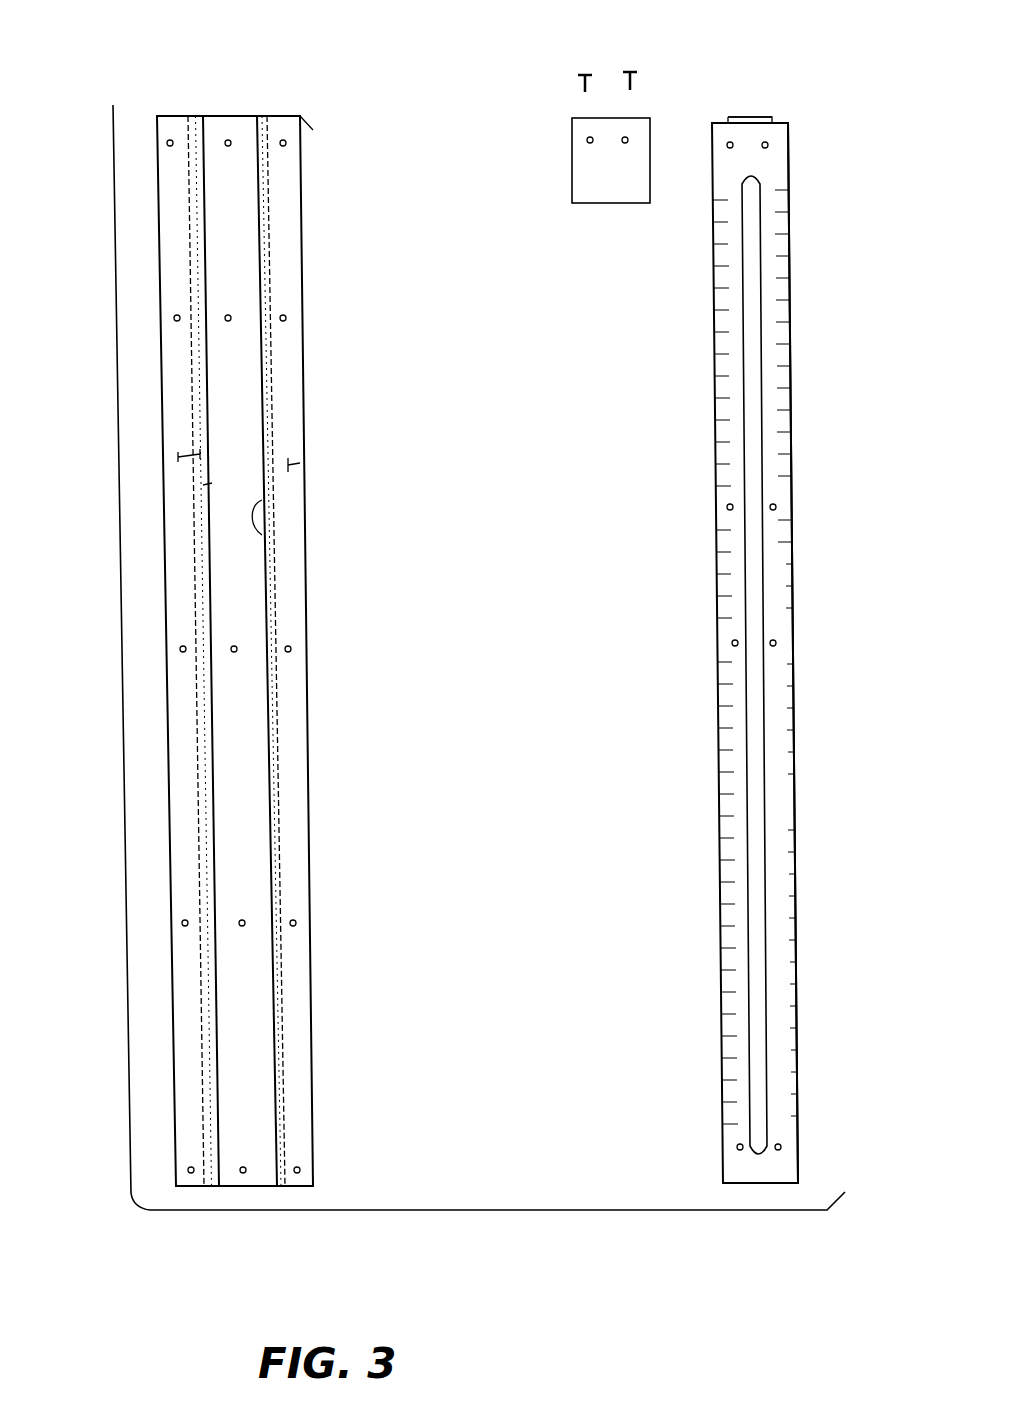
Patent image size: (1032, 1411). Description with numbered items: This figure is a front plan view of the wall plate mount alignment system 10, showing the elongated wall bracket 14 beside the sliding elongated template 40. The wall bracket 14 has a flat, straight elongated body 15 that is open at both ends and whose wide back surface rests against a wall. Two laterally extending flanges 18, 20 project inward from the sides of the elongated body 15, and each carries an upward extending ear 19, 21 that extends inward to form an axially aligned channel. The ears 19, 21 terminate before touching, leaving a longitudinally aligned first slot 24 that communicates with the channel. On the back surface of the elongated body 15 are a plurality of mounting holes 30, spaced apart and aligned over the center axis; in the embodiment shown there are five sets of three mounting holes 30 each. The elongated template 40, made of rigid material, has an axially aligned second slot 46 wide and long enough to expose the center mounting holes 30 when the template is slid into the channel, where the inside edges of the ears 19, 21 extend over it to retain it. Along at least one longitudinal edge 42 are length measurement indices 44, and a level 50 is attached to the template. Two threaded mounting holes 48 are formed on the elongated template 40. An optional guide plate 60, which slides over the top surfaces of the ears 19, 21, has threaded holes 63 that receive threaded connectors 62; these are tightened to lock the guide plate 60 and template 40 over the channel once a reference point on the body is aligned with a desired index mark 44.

The wall plate mount alignment system 10 is at (150, 1210).
The elongated wall bracket 14 is at (305, 196).
The elongated body 15 is at (300, 125).
The flange 18 is at (200, 453).
The ear 19 is at (210, 488).
The flange 20 is at (300, 463).
The ear 21 is at (265, 533).
The first slot 24 is at (232, 312).
The mounting holes 30 is at (173, 140).
The elongated template 40 is at (797, 165).
The longitudinal edge 42 is at (791, 265).
The length measurement indices 44 is at (733, 505).
The second slot 46 is at (757, 818).
The threaded mounting holes 48 is at (733, 143).
The level 50 is at (768, 123).
The guide plate 60 is at (572, 165).
The threaded connectors 62 is at (629, 71).
The threaded holes 63 is at (624, 138).